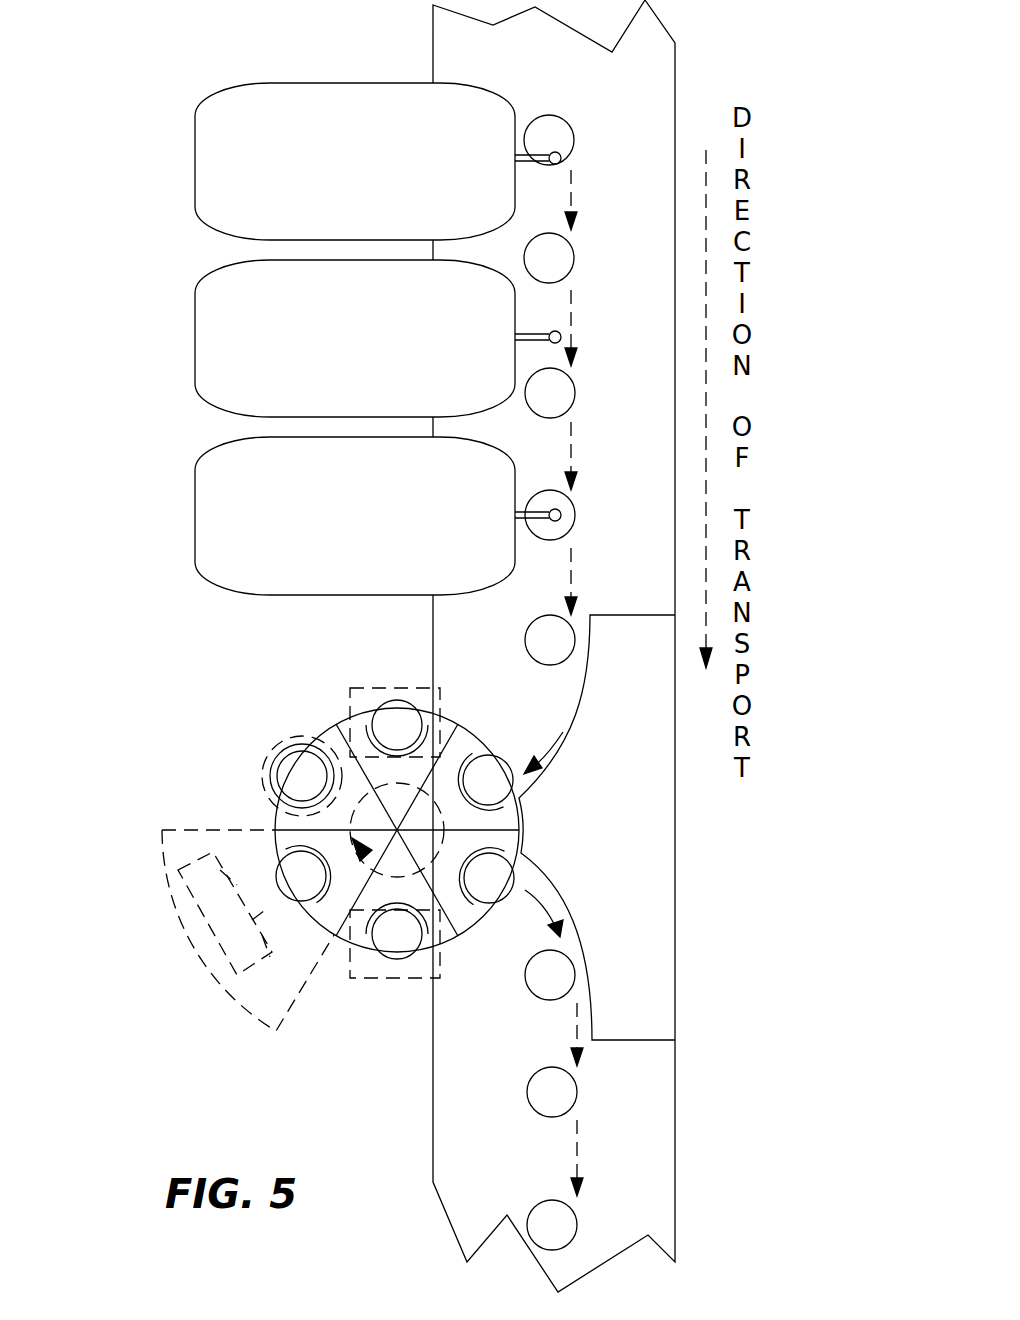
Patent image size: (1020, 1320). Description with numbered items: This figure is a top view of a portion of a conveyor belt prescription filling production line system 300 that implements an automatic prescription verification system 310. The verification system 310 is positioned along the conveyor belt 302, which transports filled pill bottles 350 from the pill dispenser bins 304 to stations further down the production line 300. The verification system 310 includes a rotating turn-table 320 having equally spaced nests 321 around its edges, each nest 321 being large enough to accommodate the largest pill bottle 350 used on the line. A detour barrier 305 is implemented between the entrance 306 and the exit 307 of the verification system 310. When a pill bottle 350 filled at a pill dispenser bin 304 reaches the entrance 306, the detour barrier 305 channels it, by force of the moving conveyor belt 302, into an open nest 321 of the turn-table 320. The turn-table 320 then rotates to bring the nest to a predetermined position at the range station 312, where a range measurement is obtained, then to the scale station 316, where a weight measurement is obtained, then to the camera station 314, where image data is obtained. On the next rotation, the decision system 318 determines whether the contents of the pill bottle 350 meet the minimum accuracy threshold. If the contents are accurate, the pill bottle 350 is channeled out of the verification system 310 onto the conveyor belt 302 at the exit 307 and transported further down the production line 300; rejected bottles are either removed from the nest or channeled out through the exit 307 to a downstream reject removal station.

The conveyor belt prescription filling production line system 300 is at (112, 25).
The conveyor belt 302 is at (676, 78).
The pill dispenser bins 304 is at (195, 150).
The detour barrier 305 is at (647, 918).
The entrance 306 is at (568, 742).
The exit 307 is at (555, 897).
The automatic prescription verification system 310 is at (178, 735).
The range station 312 is at (410, 688).
The camera station 314 is at (218, 946).
The scale station 316 is at (313, 745).
The decision system 318 is at (362, 980).
The rotating turn-table 320 is at (278, 818).
The nests 321 is at (483, 756).
The pill bottles 350 is at (566, 122).